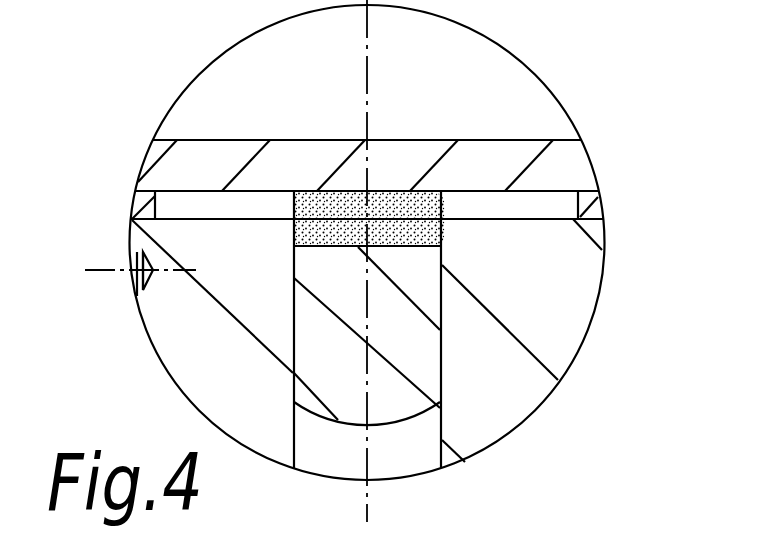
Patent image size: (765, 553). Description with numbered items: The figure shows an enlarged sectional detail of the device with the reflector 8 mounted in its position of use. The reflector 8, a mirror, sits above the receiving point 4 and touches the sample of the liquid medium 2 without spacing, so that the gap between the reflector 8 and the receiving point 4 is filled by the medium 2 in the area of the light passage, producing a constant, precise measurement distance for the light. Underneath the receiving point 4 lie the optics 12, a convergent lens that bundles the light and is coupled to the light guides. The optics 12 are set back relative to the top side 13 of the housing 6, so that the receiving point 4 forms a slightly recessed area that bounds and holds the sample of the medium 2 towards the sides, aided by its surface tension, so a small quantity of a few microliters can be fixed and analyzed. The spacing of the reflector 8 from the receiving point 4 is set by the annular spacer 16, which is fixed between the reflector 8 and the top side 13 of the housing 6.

The medium 2 is at (442, 228).
The receiving point 4 is at (318, 248).
The housing 6 is at (557, 347).
The reflector 8 is at (495, 152).
The optics 12 is at (400, 397).
The top side 13 is at (197, 215).
The annular spacer 16 is at (588, 200).